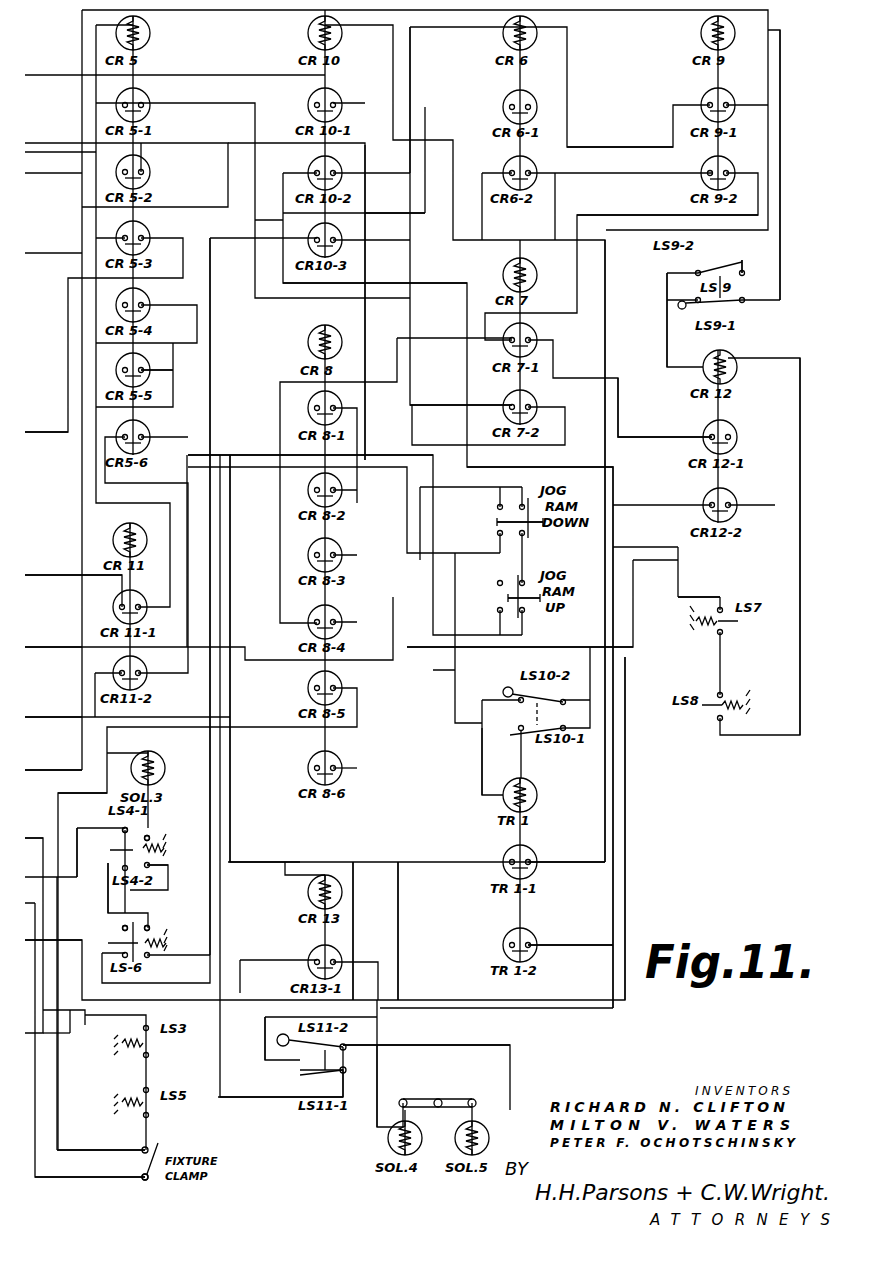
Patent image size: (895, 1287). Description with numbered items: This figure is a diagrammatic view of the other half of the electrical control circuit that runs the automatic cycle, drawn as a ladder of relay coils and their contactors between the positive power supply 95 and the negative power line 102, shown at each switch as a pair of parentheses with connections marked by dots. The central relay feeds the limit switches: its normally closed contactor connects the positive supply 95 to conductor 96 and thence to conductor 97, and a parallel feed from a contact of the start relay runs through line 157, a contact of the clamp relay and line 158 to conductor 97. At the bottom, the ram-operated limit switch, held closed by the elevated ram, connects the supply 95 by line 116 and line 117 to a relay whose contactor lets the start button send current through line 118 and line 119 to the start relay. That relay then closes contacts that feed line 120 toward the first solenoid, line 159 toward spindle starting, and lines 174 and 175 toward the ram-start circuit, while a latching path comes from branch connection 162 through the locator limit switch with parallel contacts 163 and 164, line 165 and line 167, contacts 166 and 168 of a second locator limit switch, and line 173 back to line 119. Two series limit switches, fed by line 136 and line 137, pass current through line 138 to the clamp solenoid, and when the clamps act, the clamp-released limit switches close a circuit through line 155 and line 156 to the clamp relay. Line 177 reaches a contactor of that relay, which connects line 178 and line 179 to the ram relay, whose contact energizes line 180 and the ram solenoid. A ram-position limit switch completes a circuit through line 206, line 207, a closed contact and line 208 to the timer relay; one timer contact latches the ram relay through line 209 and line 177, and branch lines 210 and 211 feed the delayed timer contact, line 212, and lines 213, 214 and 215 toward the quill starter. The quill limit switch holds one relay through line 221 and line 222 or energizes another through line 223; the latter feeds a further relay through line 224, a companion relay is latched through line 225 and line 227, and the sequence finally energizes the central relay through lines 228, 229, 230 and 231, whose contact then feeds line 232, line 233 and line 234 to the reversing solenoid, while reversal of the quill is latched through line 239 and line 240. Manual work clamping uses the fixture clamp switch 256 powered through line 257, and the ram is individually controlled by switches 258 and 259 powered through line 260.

The positive power supply 95 is at (512, 945).
The conductor 96 is at (353, 935).
The conductor 97 is at (258, 993).
The negative power line 102 is at (420, 1150).
The line 116 is at (262, 1060).
The line 117 is at (275, 1097).
The line 118 is at (58, 575).
The line 119 is at (96, 503).
The line 120 is at (48, 770).
The line 136 is at (35, 838).
The line 137 is at (50, 1035).
The line 138 is at (57, 1130).
The line 155 is at (695, 597).
The line 156 is at (800, 580).
The line 157 is at (632, 437).
The line 158 is at (628, 778).
The line 159 is at (142, 150).
The branch connection 162 is at (77, 828).
The contact 163 is at (125, 838).
The contact 164 is at (150, 840).
The line 165 is at (108, 870).
The contact 166 is at (150, 930).
The line 167 is at (168, 888).
The contact 168 is at (122, 930).
The line 173 is at (210, 360).
The line 174 is at (165, 372).
The line 175 is at (398, 623).
The line 177 is at (560, 1008).
The line 178 is at (755, 505).
The line 179 is at (285, 815).
The line 180 is at (377, 1087).
The line 206 is at (485, 770).
The line 207 is at (600, 647).
The line 208 is at (455, 790).
The line 209 is at (570, 938).
The branch line 210 is at (35, 717).
The branch line 211 is at (228, 800).
The line 212 is at (603, 822).
The line 213 is at (600, 147).
The line 214 is at (385, 215).
The line 215 is at (268, 210).
The line 221 is at (667, 333).
The line 222 is at (782, 245).
The line 223 is at (745, 262).
The line 224 is at (412, 70).
The line 225 is at (230, 555).
The line 227 is at (565, 225).
The line 228 is at (210, 280).
The line 229 is at (410, 278).
The line 230 is at (437, 407).
The line 231 is at (370, 333).
The line 232 is at (362, 775).
The line 233 is at (398, 920).
The line 234 is at (420, 1045).
The line 239 is at (48, 173).
The line 240 is at (230, 64).
The fixture clamp switch 256 is at (150, 1180).
The line 257 is at (112, 1180).
The switch 258 is at (527, 505).
The switch 259 is at (530, 590).
The line 260 is at (37, 647).